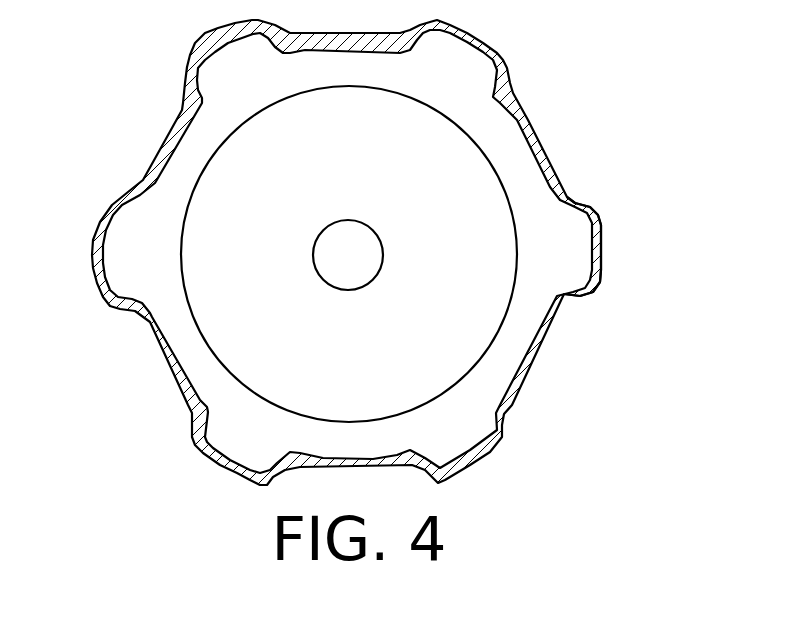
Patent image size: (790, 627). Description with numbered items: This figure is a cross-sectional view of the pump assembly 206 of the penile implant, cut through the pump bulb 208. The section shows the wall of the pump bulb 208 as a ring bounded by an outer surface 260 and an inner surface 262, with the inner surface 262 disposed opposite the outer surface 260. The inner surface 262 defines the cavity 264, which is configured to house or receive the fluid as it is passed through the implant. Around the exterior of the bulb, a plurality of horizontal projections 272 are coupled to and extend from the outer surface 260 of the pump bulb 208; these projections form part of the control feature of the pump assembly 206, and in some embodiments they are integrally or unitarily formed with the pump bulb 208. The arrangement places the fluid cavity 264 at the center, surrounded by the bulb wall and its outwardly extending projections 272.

The pump assembly 206 is at (375, 247).
The pump bulb 208 is at (486, 44).
The outer surface 260 is at (537, 127).
The inner surface 262 is at (543, 343).
The horizontal projections 272 is at (603, 223).
The cavity 264 is at (503, 363).